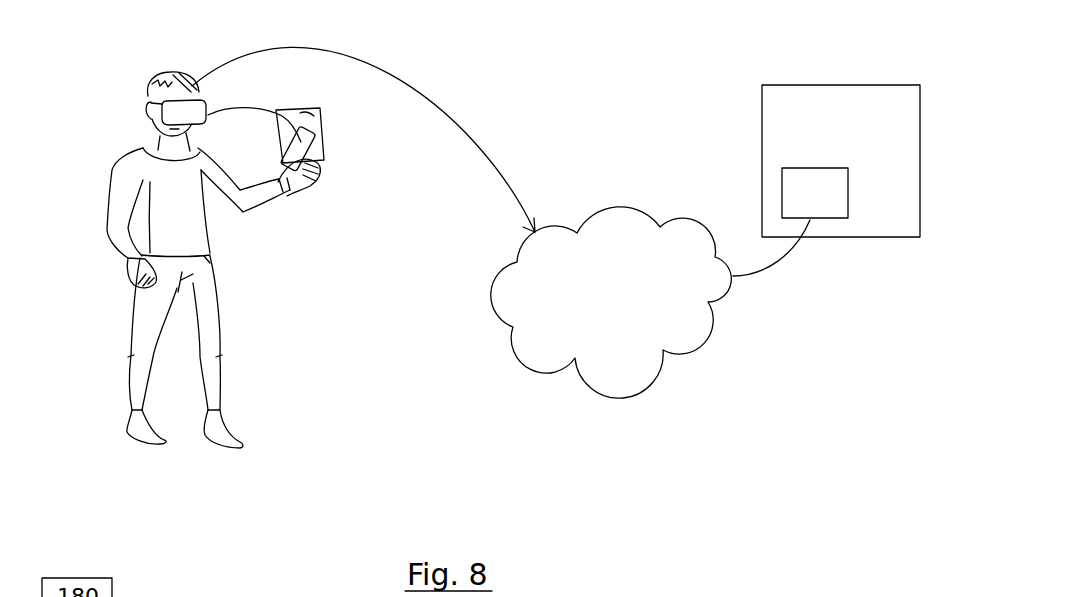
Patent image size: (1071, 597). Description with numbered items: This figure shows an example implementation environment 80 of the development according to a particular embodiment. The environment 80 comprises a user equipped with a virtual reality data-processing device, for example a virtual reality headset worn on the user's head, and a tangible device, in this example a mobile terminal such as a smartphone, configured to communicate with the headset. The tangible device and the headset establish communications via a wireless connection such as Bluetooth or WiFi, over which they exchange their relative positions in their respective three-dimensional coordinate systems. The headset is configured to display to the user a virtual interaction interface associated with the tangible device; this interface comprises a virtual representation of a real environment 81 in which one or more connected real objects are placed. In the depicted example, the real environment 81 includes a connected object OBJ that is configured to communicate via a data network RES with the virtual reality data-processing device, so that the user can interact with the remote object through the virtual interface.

The implementation environment 80 is at (110, 103).
The real environment 81 is at (775, 83).
The data network RES is at (611, 302).
The connected object OBJ is at (815, 193).